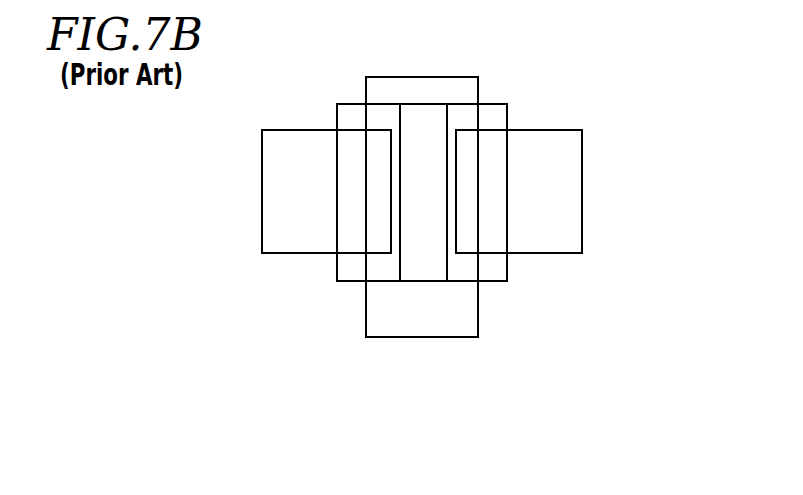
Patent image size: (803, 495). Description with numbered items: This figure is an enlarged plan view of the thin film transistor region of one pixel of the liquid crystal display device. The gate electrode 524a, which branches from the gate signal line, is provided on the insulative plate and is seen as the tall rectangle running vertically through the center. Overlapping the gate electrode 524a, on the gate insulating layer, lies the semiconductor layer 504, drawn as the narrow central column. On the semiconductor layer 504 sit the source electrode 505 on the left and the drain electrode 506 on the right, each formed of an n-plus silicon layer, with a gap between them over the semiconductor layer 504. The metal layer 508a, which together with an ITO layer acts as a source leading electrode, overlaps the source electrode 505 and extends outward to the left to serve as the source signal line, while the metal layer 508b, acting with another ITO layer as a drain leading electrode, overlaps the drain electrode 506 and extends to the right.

The semiconductor layer 504 is at (427, 128).
The source electrode 505 is at (345, 120).
The drain electrode 506 is at (493, 115).
The metal layer 508a is at (280, 233).
The metal layer 508b is at (562, 222).
The gate electrode 524a is at (479, 298).